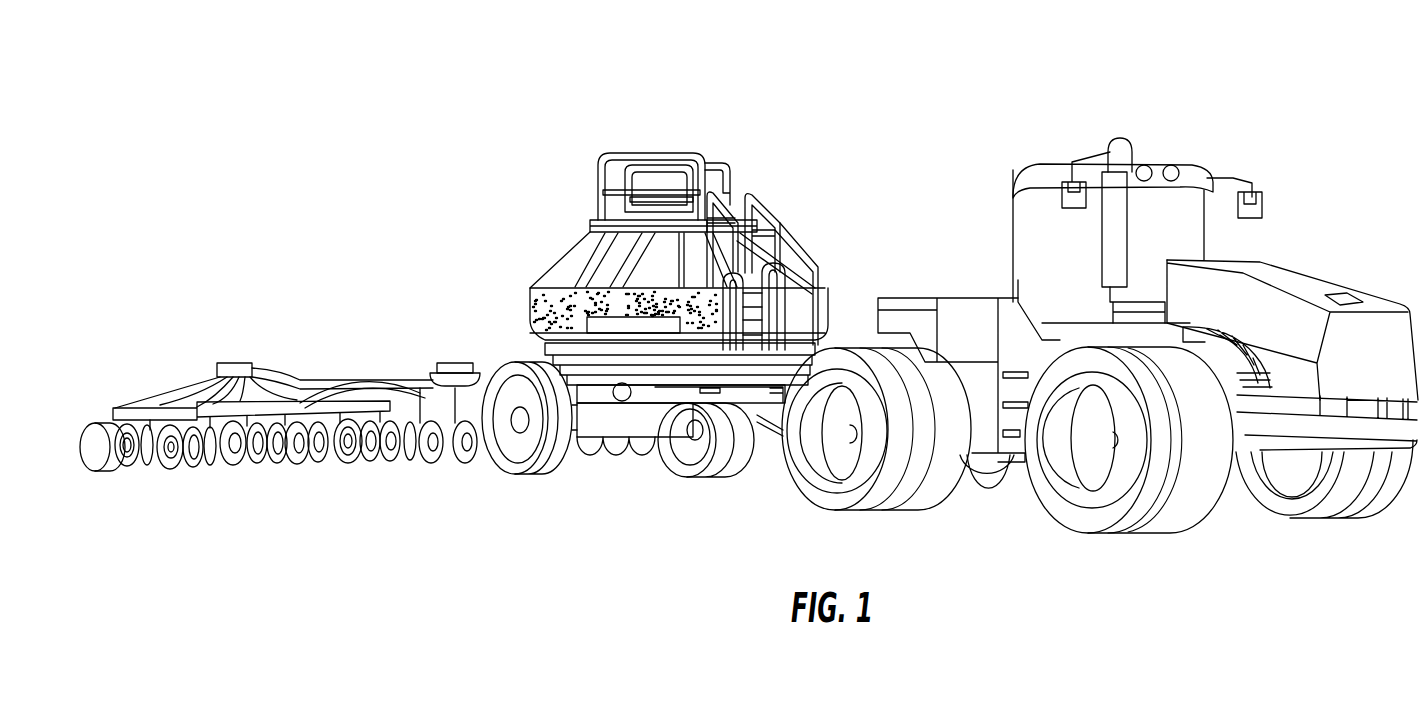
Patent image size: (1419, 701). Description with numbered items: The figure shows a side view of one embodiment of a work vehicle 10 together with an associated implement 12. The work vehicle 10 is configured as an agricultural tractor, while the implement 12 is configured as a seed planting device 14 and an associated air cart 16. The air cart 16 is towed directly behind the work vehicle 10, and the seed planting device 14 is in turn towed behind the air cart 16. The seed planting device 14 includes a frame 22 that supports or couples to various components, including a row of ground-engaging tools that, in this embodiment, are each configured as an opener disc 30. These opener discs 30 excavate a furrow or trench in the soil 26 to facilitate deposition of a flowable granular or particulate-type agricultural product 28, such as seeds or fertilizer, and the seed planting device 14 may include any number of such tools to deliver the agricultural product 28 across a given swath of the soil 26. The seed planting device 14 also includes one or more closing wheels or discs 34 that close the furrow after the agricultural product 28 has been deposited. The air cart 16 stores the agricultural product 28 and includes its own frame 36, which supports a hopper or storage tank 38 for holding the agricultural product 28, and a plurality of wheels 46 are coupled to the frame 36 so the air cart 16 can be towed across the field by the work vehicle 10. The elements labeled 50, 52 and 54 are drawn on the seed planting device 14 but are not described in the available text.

The work vehicle 10 is at (1256, 118).
The implement 12 is at (209, 158).
The seed planting device 14 is at (314, 189).
The air cart 16 is at (664, 100).
The frame 22 is at (360, 405).
The soil 26 is at (311, 466).
The agricultural product 28 is at (555, 293).
The opener disc 30 is at (232, 468).
The closing wheels or discs 34 is at (113, 472).
The frame 36 is at (677, 395).
The hopper or storage tank 38 is at (590, 250).
The wheels 46 is at (552, 463).
The hoses 50 is at (268, 383).
The distribution headers 52 is at (228, 362).
The hose 54 is at (147, 405).